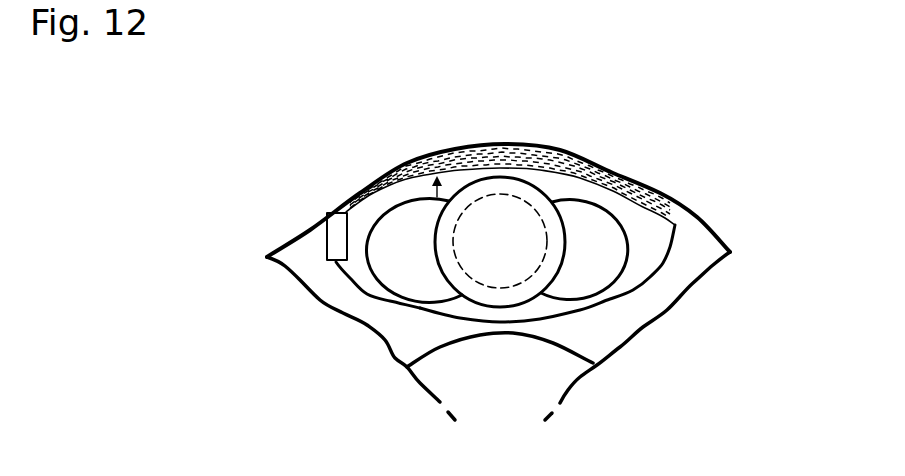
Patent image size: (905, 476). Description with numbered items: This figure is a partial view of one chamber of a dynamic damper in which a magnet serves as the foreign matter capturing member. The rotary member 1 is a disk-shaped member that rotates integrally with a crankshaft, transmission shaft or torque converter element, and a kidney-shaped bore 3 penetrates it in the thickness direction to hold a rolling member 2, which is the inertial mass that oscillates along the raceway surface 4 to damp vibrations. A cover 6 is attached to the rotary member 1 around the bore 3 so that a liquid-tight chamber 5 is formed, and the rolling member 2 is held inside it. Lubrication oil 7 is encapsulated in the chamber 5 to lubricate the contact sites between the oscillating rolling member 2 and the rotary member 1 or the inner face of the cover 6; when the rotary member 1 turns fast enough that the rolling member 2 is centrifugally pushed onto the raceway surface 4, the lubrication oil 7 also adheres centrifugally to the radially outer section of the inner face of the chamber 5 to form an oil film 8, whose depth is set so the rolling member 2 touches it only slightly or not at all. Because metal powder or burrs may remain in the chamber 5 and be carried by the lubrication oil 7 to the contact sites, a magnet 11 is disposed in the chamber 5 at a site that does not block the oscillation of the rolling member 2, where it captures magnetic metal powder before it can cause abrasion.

The rotary member 1 is at (622, 317).
The rolling member 2 is at (567, 243).
The bore 3 is at (405, 278).
The raceway surface 4 is at (600, 212).
The chamber 5 is at (353, 268).
The cover 6 is at (550, 320).
The lubrication oil 7 is at (648, 190).
The oil film 8 is at (437, 197).
The magnet 11 is at (334, 235).